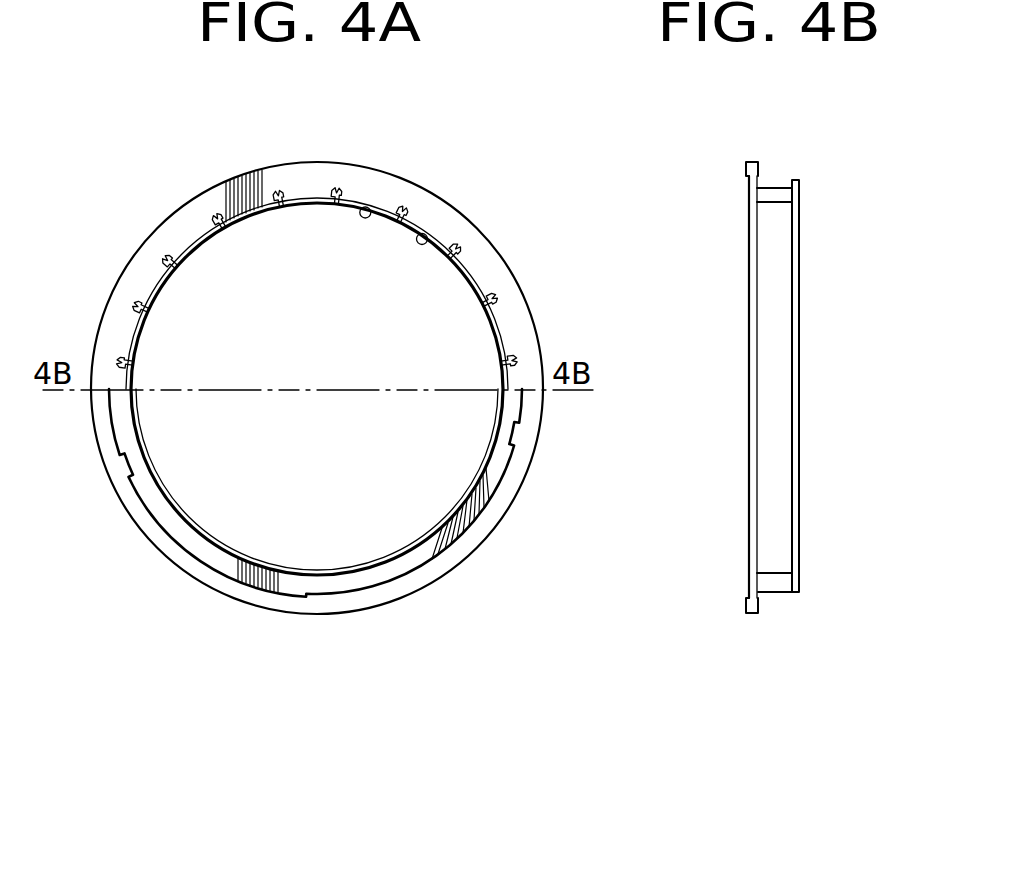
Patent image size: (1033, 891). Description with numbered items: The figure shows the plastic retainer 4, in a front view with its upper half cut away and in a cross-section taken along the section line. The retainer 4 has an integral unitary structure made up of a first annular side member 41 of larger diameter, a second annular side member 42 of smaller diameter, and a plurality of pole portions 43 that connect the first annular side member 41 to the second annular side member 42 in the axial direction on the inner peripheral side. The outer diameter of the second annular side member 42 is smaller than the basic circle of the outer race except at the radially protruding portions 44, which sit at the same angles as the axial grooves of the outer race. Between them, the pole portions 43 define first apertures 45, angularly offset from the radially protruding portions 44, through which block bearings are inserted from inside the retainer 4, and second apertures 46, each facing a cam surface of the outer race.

In FIG. 4A, the retainer 4 is at (492, 268).
In FIG. 4B, the first annular side member 41 is at (752, 256).
In FIG. 4B, the second annular side member 42 is at (800, 258).
In FIG. 4A, the pole portions 43 is at (227, 218).
In FIG. 4B, the pole portions 43 is at (776, 583).
In FIG. 4A, the radially protruding portions 44 is at (125, 474).
In FIG. 4B, the radially protruding portions 44 is at (797, 180).
In FIG. 4A, the first apertures 45 is at (199, 249).
In FIG. 4A, the second apertures 46 is at (376, 212).